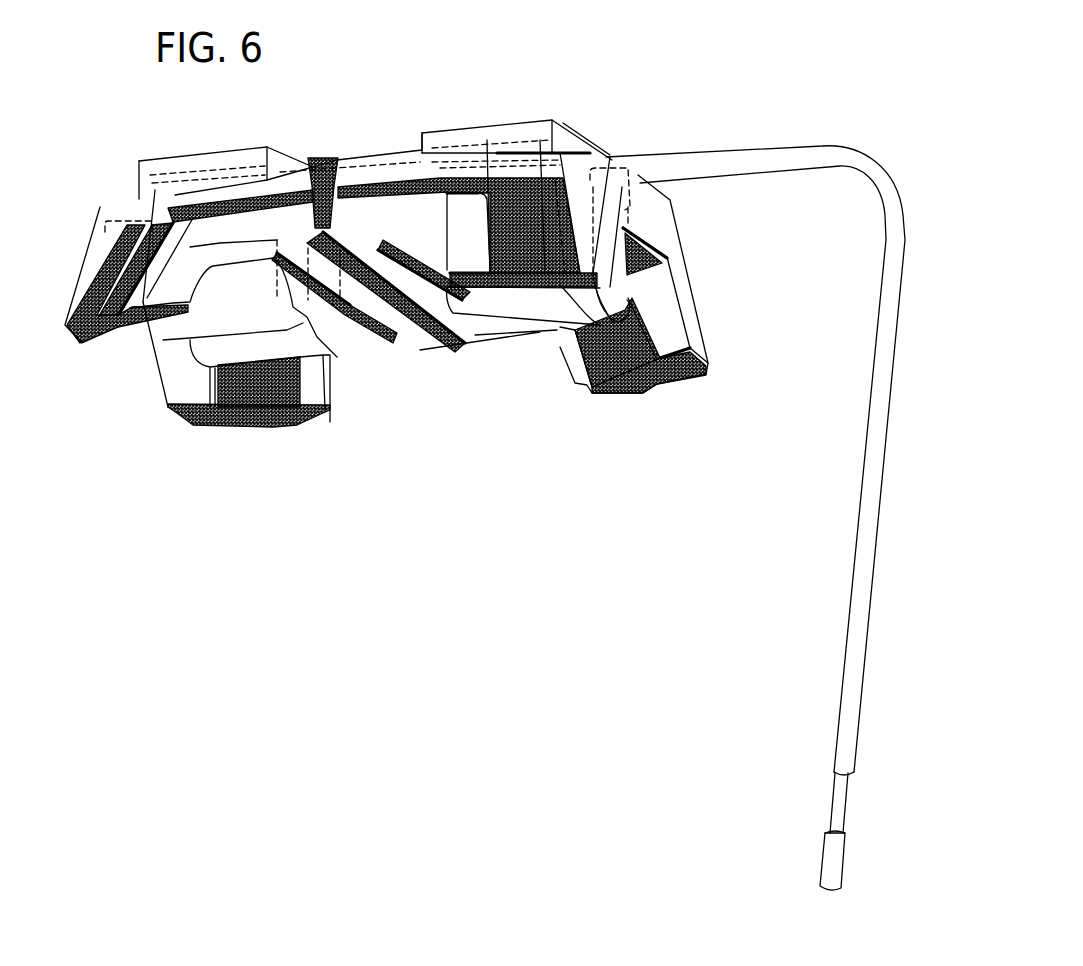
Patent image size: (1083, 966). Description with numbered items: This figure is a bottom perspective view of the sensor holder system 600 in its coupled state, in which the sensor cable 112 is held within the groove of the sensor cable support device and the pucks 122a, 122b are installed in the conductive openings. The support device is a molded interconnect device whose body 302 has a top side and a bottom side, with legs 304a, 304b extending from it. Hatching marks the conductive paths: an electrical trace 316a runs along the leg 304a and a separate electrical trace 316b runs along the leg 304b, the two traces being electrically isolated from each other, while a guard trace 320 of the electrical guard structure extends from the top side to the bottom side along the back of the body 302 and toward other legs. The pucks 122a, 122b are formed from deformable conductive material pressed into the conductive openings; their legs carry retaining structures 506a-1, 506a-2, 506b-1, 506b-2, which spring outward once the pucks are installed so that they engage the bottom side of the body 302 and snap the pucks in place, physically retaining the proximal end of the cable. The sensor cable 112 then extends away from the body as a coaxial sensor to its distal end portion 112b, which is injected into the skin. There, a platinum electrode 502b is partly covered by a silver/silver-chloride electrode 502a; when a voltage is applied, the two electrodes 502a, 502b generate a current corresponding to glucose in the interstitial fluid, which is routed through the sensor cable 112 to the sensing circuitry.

The assembly 600 is at (720, 95).
The body 302 is at (384, 166).
The guard trace 320 is at (351, 160).
The puck 122a is at (565, 132).
The puck 122b is at (193, 160).
The sensor cable 112 is at (863, 160).
The distal end portion 112b is at (805, 883).
The leg 304a is at (693, 323).
The leg 304b is at (175, 412).
The electrical trace 316a is at (632, 357).
The electrical trace 316b is at (262, 402).
The retaining structure 506a-1 is at (523, 297).
The retaining structure 506a-2 is at (552, 320).
The retaining structure 506b-1 is at (177, 331).
The retaining structure 506b-2 is at (193, 392).
The electrode 502a is at (831, 853).
The electrode 502b is at (835, 807).